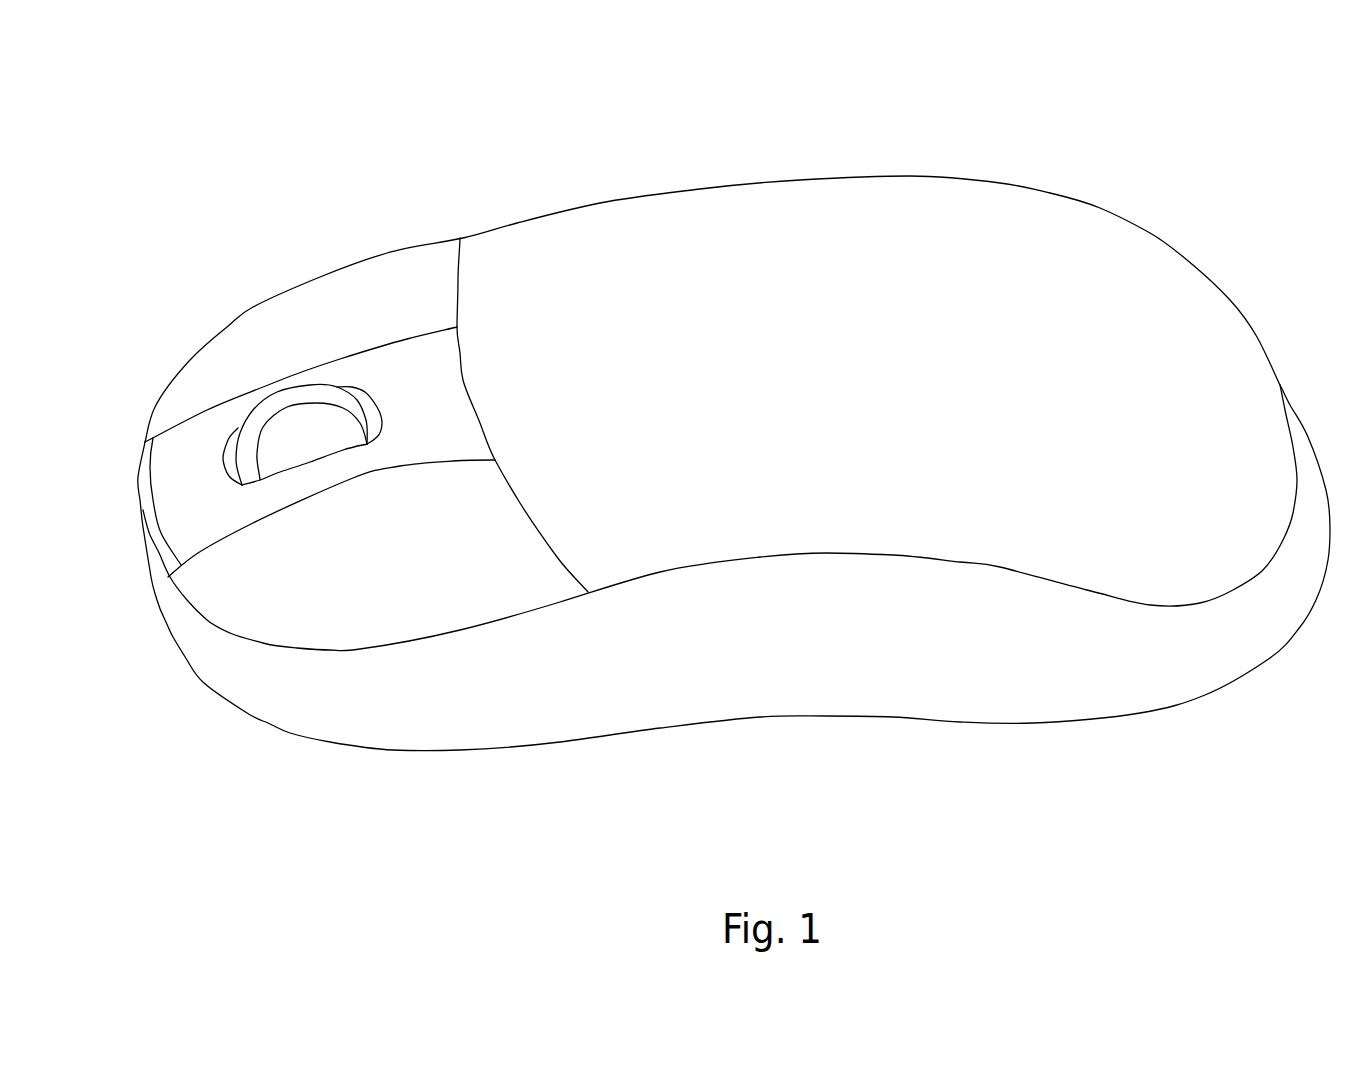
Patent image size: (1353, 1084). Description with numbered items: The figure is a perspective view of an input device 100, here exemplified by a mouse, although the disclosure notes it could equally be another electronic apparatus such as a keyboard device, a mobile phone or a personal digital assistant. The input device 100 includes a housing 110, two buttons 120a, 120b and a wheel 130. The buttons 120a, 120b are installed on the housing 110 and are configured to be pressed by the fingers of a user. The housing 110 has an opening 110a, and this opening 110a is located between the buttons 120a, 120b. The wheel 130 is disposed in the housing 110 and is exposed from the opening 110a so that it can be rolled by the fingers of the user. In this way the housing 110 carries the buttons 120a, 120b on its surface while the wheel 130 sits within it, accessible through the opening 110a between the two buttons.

The input device 100 is at (146, 74).
The housing 110 is at (815, 225).
The opening 110a is at (225, 443).
The button 120a is at (330, 590).
The button 120b is at (365, 297).
The wheel 130 is at (280, 403).